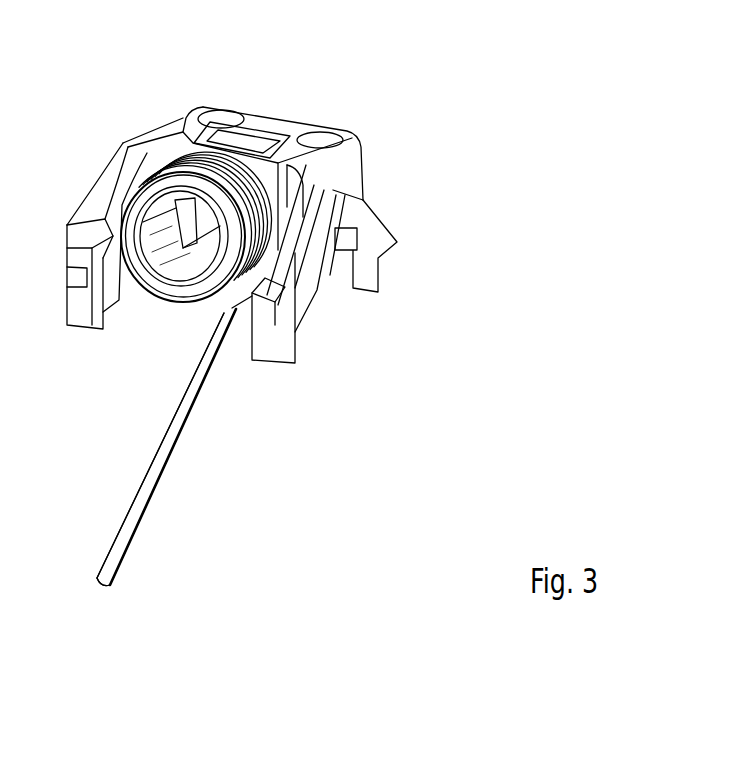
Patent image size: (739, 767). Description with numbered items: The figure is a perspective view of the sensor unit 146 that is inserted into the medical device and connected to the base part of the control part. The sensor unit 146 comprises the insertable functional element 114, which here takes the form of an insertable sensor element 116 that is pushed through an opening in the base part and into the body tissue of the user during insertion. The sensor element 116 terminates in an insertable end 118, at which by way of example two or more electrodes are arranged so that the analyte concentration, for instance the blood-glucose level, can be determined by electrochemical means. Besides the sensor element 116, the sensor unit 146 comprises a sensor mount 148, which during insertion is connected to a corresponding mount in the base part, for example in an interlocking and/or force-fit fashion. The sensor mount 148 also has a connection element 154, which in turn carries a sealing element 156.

The sensor unit 146 is at (432, 97).
The sensor mount 148 is at (381, 214).
The connection element 154 is at (150, 302).
The sealing element 156 is at (182, 128).
The insertable functional element 114 is at (178, 424).
The insertable sensor element 116 is at (160, 445).
The insertable end 118 is at (102, 586).